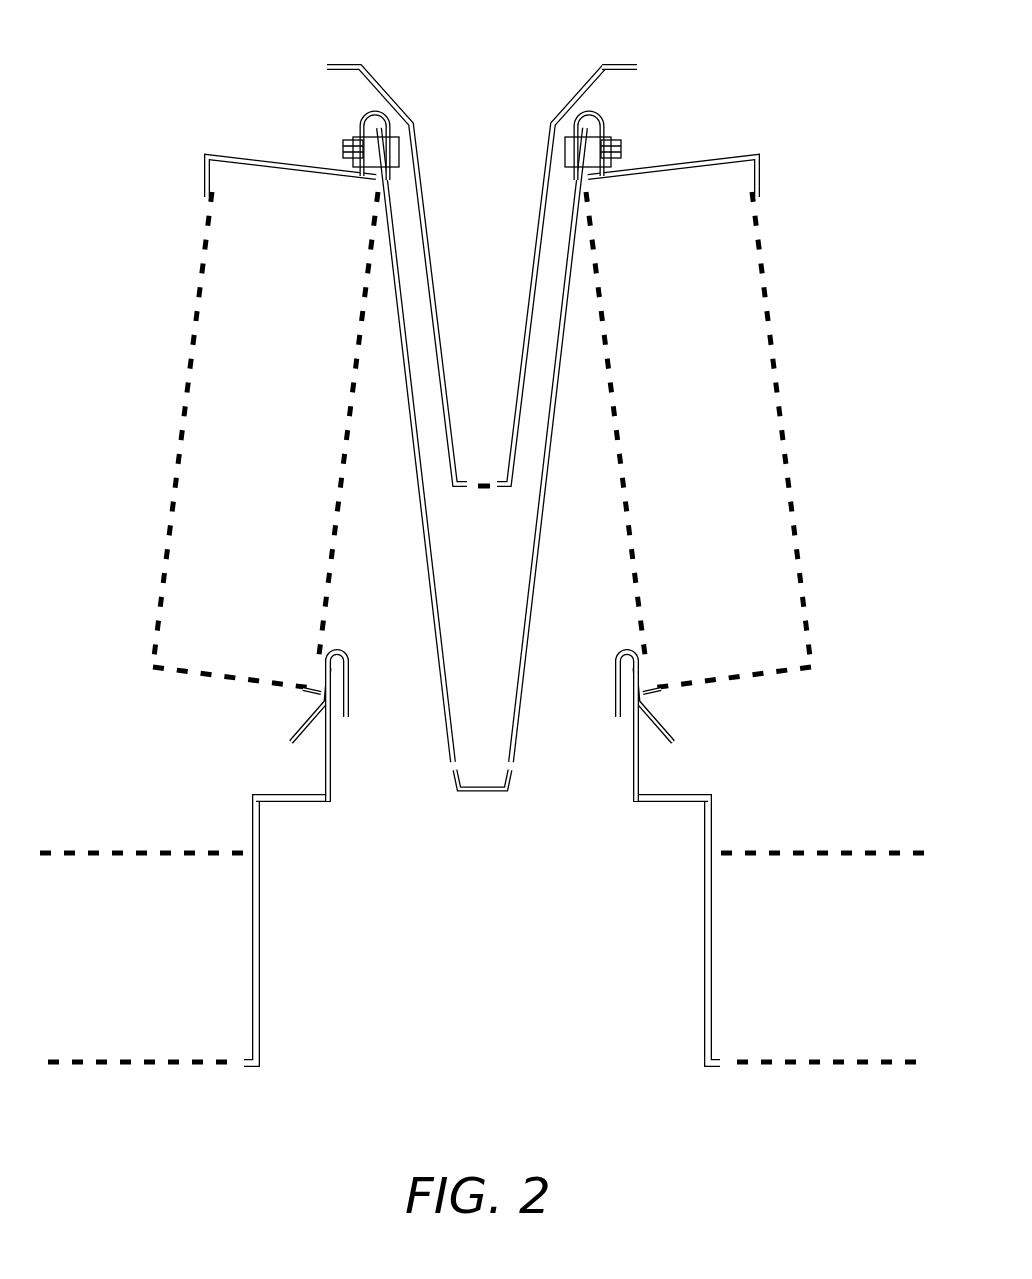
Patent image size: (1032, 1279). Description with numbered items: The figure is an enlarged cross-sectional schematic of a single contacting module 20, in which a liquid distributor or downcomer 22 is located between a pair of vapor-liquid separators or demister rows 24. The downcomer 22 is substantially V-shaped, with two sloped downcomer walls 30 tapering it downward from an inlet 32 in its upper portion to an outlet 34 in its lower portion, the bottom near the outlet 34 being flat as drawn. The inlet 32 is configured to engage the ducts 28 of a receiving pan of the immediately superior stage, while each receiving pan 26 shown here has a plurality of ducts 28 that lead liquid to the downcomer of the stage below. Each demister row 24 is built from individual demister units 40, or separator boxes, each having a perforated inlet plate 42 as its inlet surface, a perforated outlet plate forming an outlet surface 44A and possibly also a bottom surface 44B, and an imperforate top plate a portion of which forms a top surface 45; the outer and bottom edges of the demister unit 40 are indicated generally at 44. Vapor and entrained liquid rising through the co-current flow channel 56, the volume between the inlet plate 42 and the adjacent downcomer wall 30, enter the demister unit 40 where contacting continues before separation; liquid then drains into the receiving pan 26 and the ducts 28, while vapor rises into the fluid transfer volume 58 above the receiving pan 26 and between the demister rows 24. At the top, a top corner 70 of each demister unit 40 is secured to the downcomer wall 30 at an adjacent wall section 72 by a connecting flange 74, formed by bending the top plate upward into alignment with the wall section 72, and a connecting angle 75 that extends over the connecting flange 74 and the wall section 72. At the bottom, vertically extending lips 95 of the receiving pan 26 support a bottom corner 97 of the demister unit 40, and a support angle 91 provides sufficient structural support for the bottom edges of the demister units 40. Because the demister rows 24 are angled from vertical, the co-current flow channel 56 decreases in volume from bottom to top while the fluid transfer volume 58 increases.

The contacting module 20 is at (218, 92).
The downcomer 22 is at (391, 488).
The demister row 24 is at (162, 240).
The receiving pan 26 is at (304, 806).
The duct 28 is at (452, 178).
The downcomer wall 30 is at (537, 525).
The inlet 32 is at (363, 112).
The outlet 34 is at (452, 767).
The demister unit 40 is at (286, 437).
The perforated inlet plate 42 is at (336, 500).
The panel outer edge 44 is at (192, 332).
The outlet surface 44A is at (775, 309).
The bottom surface 44B is at (750, 672).
The top surface 45 is at (256, 152).
The co-current flow channel 56 is at (407, 582).
The fluid transfer volume 58 is at (142, 437).
The top corner 70 is at (628, 150).
The adjacent wall section 72 is at (556, 118).
The connecting flange 74 is at (604, 68).
The connecting angle 75 is at (582, 108).
The support angle 91 is at (302, 717).
The vertically extending lip 95 is at (322, 758).
The bottom corner 97 is at (662, 683).